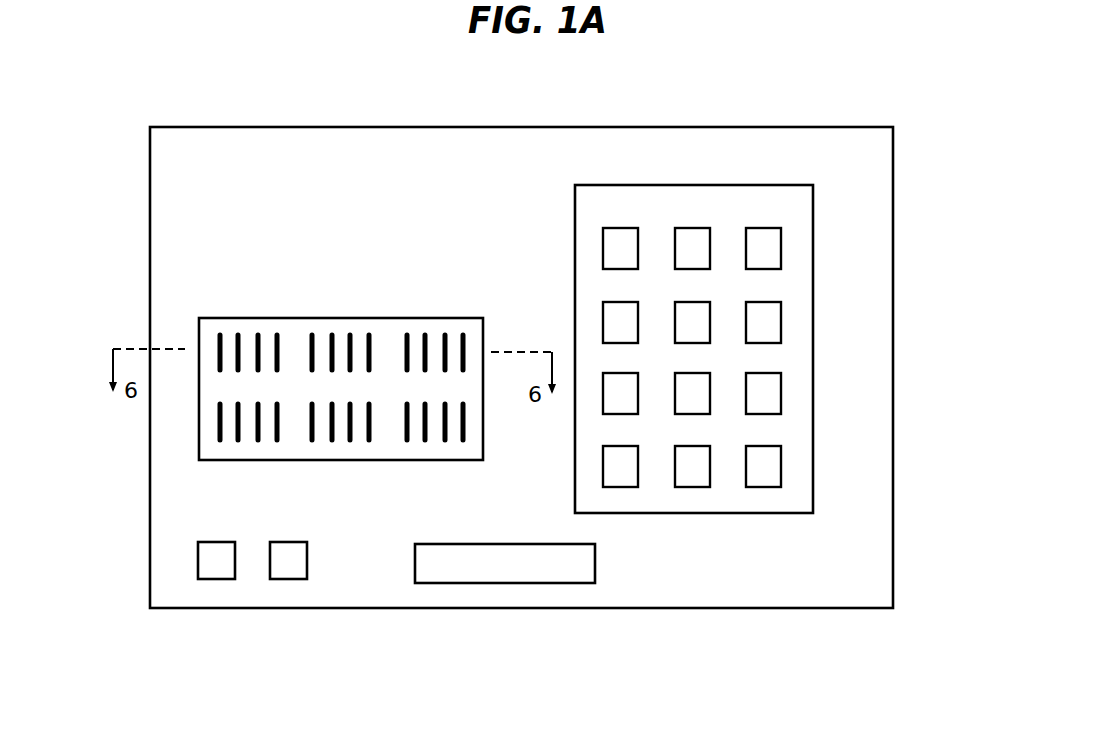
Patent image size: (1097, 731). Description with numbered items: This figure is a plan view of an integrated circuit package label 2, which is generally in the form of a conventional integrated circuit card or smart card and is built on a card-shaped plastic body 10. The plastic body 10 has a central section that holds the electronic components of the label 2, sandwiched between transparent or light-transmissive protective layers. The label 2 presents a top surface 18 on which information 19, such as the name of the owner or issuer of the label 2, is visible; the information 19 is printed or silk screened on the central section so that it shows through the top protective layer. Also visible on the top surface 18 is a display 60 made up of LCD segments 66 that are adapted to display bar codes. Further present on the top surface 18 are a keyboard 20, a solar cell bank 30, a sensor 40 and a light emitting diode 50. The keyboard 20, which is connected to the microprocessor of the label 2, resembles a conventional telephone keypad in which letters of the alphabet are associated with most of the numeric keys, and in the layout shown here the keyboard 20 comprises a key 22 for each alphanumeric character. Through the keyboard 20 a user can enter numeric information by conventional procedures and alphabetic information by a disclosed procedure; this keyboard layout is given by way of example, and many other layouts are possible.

The integrated circuit package label 2 is at (385, 100).
The plastic body 10 is at (572, 128).
The top surface 18 is at (878, 180).
The information 19 is at (449, 173).
The keyboard 20 is at (813, 318).
The key 22 is at (770, 460).
The solar cell bank 30 is at (563, 583).
The sensor 40 is at (307, 558).
The light emitting diode (LED) 50 is at (233, 558).
The display 60 is at (190, 414).
The LCD segments 66 is at (218, 355).